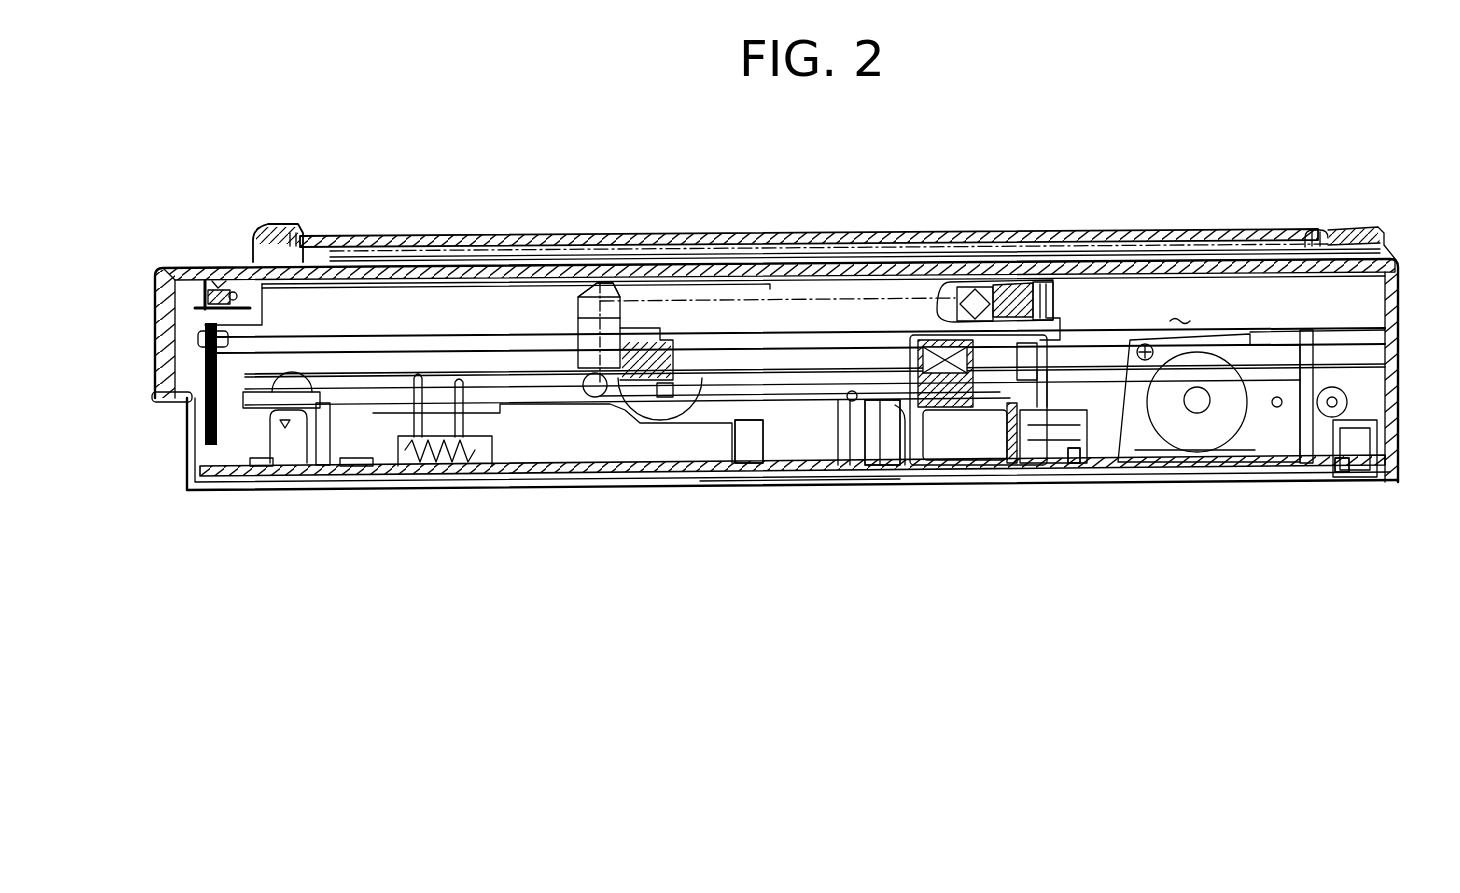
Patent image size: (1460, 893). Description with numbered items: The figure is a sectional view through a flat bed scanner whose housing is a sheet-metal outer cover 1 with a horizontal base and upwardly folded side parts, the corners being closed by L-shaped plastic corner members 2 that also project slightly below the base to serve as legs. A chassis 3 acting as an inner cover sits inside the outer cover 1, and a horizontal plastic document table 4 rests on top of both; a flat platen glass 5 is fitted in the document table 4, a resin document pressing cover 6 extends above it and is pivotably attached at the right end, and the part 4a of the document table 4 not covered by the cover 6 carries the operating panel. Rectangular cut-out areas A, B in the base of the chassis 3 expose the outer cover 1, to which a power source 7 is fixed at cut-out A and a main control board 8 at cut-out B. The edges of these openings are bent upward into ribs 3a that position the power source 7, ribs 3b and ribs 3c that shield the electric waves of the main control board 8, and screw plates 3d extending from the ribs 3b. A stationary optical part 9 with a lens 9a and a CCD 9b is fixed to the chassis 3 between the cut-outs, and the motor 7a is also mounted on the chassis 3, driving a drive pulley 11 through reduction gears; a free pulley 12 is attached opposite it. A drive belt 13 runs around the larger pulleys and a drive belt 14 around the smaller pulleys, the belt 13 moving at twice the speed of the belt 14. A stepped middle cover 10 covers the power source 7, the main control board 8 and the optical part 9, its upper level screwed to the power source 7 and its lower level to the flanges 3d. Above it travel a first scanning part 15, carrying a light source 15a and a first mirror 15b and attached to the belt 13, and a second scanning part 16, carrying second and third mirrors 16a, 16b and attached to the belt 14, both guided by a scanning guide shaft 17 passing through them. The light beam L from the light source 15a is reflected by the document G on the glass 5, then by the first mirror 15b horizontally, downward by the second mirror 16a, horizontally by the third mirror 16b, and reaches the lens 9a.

The outer cover 1 is at (800, 479).
The corner member 2 is at (187, 472).
The chassis 3 is at (1003, 478).
The rib 3a is at (1073, 465).
The rib 3b is at (323, 445).
The rib 3c is at (750, 400).
The screw plate 3d is at (286, 440).
The document table 4 is at (1386, 262).
The part of the document table 4a is at (262, 282).
The platen glass 5 is at (748, 260).
The document pressing cover 6 is at (860, 232).
The power source 7 is at (1120, 452).
The motor 7a is at (1150, 418).
The main control board 8 is at (706, 463).
The stationary optical part 9 is at (1027, 445).
The lens 9a is at (965, 435).
The CCD 9b is at (1048, 345).
The middle cover 10 is at (1324, 330).
The drive pulley 11 is at (1393, 383).
The free pulley 12 is at (292, 385).
The drive belt 13 is at (422, 380).
The drive belt 14 is at (460, 382).
The first scanning part 15 is at (1068, 300).
The light source 15a is at (1012, 300).
The first mirror 15b is at (937, 308).
The second scanning part 16 is at (578, 330).
The second mirror 16a is at (590, 304).
The third mirror 16b is at (588, 395).
The scanning guide shaft 17 is at (446, 335).
The cut-out area A is at (1307, 478).
The cut-out area B is at (838, 402).
The document G is at (604, 236).
The light beam L is at (680, 300).